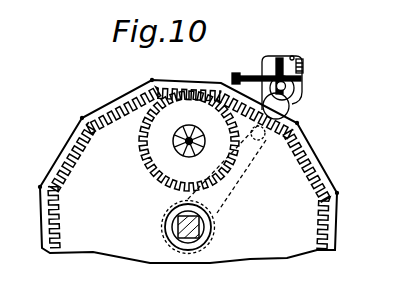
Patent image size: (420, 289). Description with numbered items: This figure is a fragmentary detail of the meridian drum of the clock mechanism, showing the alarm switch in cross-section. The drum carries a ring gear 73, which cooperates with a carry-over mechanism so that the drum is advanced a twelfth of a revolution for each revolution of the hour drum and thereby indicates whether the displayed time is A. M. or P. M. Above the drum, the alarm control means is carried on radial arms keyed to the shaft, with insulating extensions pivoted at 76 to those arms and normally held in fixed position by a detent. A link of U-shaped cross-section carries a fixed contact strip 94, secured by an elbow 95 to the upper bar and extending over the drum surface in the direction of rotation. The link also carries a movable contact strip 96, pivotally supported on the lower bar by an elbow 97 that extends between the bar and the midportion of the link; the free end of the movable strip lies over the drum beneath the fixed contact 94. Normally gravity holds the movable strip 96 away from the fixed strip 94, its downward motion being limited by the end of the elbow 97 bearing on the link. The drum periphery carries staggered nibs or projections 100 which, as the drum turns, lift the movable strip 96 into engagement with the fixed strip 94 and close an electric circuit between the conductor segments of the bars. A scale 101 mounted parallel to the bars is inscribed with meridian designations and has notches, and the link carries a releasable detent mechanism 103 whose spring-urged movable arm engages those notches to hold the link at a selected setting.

The ring gear 73 is at (56, 208).
The pivot 76 is at (289, 108).
The fixed contact strip 94 is at (250, 75).
The elbow 95 is at (266, 56).
The movable contact strip 96 is at (230, 78).
The elbow 97 is at (263, 145).
The nibs or projections 100 is at (338, 193).
The scale 101 is at (303, 64).
The releasable detent mechanism 103 is at (300, 88).